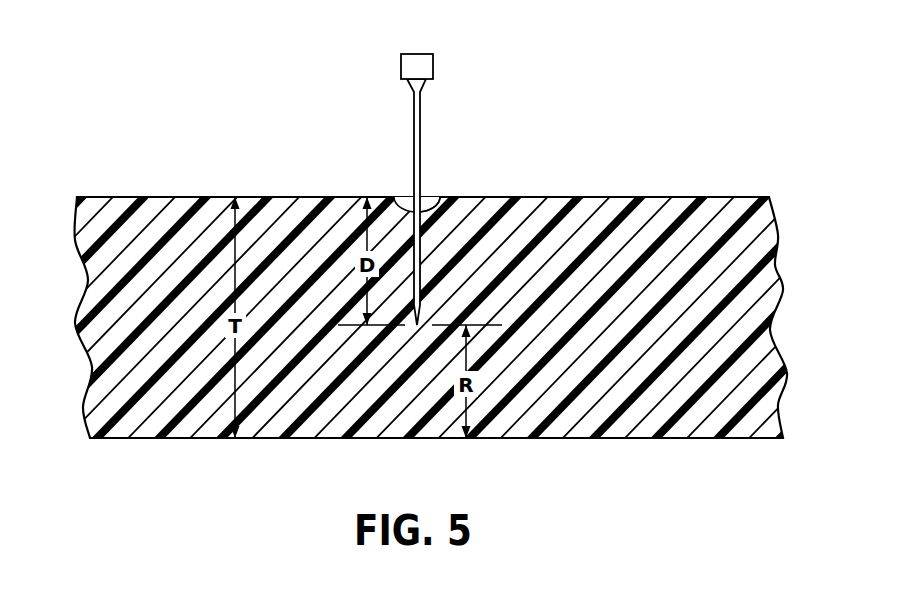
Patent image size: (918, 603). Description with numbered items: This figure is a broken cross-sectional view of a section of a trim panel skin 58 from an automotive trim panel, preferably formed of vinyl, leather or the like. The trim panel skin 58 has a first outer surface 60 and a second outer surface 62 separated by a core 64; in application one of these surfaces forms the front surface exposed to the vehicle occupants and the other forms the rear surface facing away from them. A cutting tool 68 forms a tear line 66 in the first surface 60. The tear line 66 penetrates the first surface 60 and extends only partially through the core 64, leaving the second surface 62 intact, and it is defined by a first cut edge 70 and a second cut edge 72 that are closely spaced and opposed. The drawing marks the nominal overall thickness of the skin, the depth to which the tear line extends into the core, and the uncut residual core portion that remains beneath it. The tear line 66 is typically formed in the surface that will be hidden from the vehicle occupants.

The trim panel skin 58 is at (628, 190).
The first outer surface 60 is at (122, 196).
The second outer surface 62 is at (581, 438).
The core 64 is at (114, 341).
The tear line 66 is at (423, 183).
The cutting tool 68 is at (392, 68).
The first cut edge 70 is at (396, 196).
The second cut edge 72 is at (441, 196).